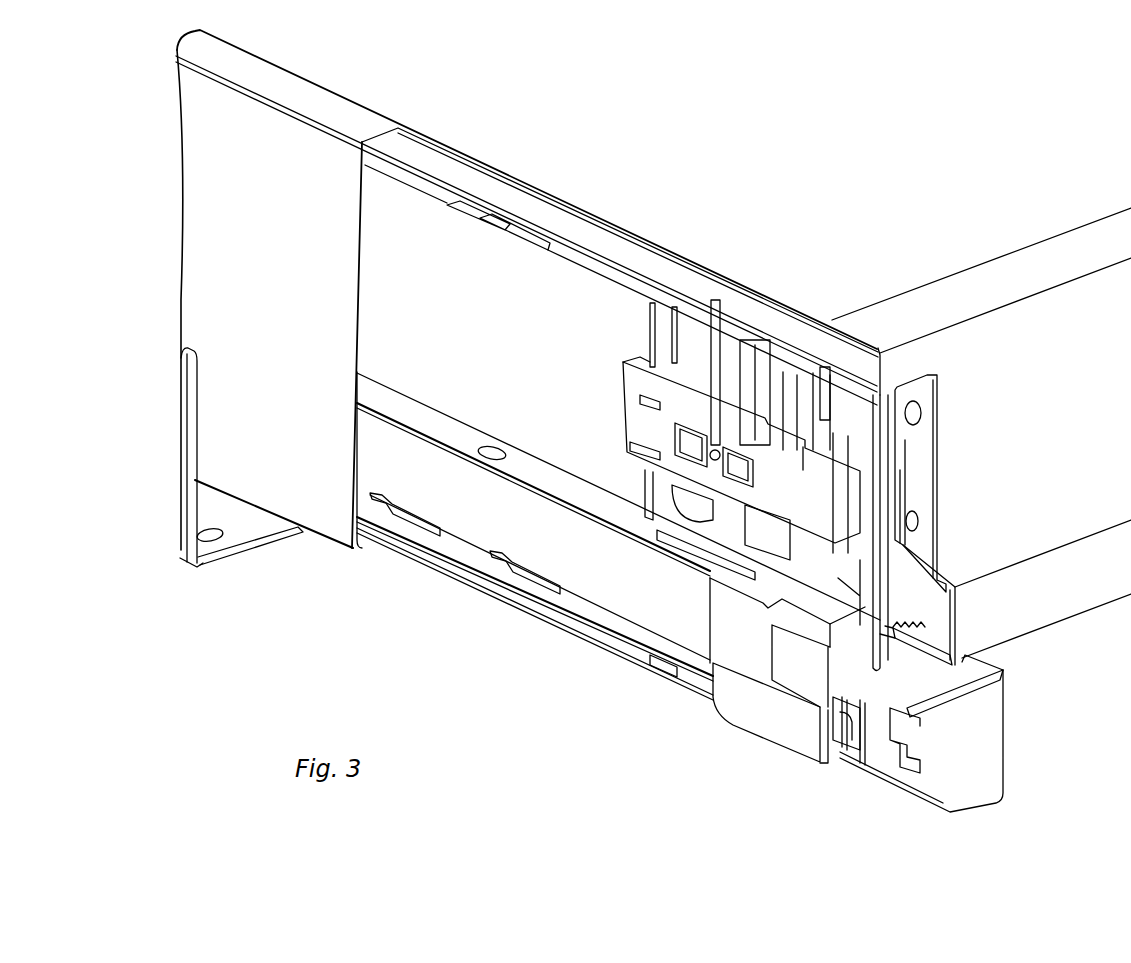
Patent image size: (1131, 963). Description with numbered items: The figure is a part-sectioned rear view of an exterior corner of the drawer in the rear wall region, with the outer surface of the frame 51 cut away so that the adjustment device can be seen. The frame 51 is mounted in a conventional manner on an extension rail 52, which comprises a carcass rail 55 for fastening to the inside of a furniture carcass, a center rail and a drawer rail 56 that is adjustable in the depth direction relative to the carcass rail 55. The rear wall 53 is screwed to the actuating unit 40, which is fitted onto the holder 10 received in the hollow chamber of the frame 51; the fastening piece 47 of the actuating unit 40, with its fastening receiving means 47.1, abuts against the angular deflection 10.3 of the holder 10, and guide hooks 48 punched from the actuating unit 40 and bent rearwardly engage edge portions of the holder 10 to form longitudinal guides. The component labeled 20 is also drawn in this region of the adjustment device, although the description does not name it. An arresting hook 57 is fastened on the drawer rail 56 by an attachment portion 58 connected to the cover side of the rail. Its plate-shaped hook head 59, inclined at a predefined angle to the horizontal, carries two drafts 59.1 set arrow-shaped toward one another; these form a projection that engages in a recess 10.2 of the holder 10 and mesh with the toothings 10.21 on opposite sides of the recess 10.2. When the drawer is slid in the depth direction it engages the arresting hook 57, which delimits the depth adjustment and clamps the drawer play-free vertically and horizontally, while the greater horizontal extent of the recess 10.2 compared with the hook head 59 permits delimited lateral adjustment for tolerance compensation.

The holder 10 is at (702, 353).
The recess 10.2 is at (905, 658).
The toothing 10.21 is at (920, 547).
The angular deflection 10.3 is at (893, 478).
The carriage 20 is at (663, 428).
The actuating unit 40 is at (930, 437).
The fastening piece 47 is at (937, 460).
The fastening receiving means 47.1 is at (923, 402).
The guide hooks 48 is at (650, 367).
The frame 51 is at (587, 235).
The extension rail 52 is at (266, 552).
The rear wall 53 is at (1008, 267).
The carcass rail 55 is at (215, 560).
The drawer rail 56 is at (1007, 735).
The arresting hook 57 is at (955, 670).
The attachment portion 58 is at (963, 662).
The hook head 59 is at (917, 647).
The drafts 59.1 is at (923, 637).